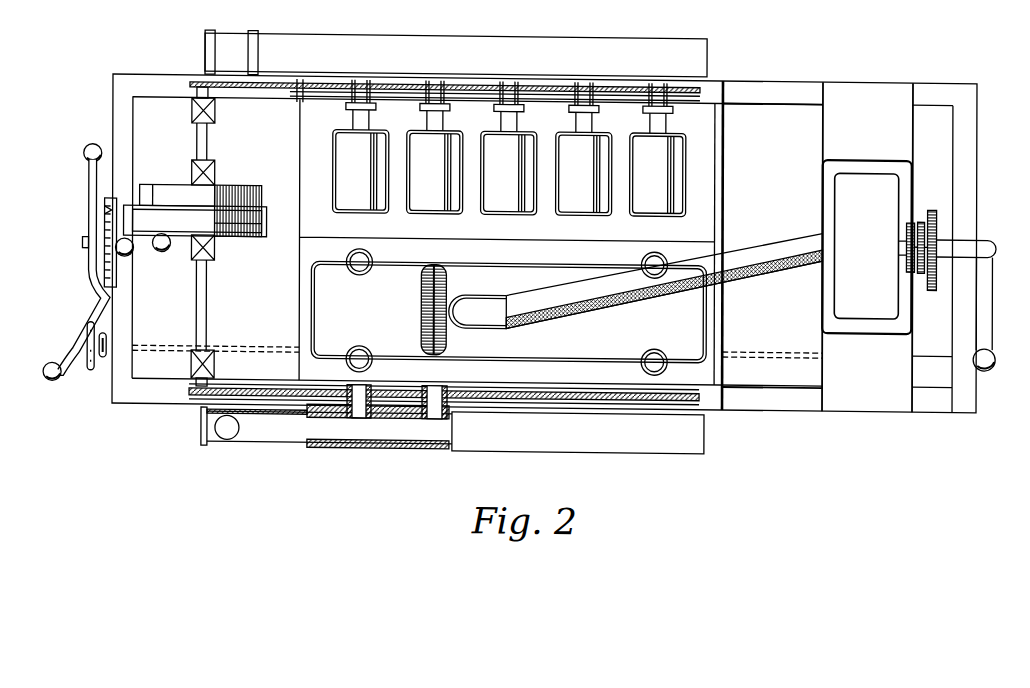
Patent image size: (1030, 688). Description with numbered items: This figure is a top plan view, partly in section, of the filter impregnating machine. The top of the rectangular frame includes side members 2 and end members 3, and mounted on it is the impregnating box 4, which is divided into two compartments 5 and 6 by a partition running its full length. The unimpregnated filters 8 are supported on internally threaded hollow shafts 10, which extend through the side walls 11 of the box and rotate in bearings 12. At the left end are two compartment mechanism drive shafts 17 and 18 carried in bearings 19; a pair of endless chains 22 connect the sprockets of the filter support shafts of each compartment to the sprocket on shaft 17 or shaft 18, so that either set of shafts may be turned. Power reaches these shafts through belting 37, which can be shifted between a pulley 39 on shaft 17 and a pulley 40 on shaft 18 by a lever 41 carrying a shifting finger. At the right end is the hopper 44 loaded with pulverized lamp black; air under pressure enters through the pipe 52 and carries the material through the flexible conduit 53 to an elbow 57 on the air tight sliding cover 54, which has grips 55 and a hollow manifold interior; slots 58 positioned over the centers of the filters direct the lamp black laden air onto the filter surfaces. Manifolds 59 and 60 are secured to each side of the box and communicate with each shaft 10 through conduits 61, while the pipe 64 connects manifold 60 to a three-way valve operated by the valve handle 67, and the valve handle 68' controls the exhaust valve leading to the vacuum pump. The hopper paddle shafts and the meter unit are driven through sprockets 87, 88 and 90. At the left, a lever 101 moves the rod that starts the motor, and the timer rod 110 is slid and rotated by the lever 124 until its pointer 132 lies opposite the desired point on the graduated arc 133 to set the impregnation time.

The side member 2 is at (780, 85).
The end member 3 is at (118, 115).
The impregnating box 4 is at (716, 160).
The compartment 5 is at (700, 137).
The compartment 6 is at (706, 359).
The filter 8 is at (348, 171).
The hollow shaft 10 is at (410, 121).
The side wall 11 is at (700, 96).
The bearing 12 is at (350, 105).
The compartment mechanism drive shaft 17 is at (207, 140).
The compartment mechanism drive shaft 18 is at (207, 300).
The bearing 19 is at (200, 166).
The endless chain 22 is at (205, 80).
The belting 37 is at (255, 193).
The pulley 39 is at (183, 190).
The pulley 40 is at (250, 236).
The lever 41 is at (133, 253).
The hopper 44 is at (858, 176).
The pipe 52 is at (995, 235).
The flexible conduit 53 is at (768, 236).
The top 54 is at (695, 308).
The handle 55 is at (664, 366).
The elbow 57 is at (488, 322).
The slot 58 is at (448, 276).
The manifold 59 is at (432, 39).
The manifold 60 is at (587, 434).
The conduit 61 is at (360, 400).
The pipe 64 is at (228, 437).
The valve handle 67 is at (49, 365).
The valve handle 68' is at (80, 368).
The sprocket 87 is at (921, 213).
The sprocket 88 is at (933, 205).
The sprocket 90 is at (910, 263).
The lever 101 is at (195, 221).
The rod 110 is at (83, 242).
The lever 124 is at (84, 152).
The pointer 132 is at (104, 208).
The arc 133 is at (108, 199).